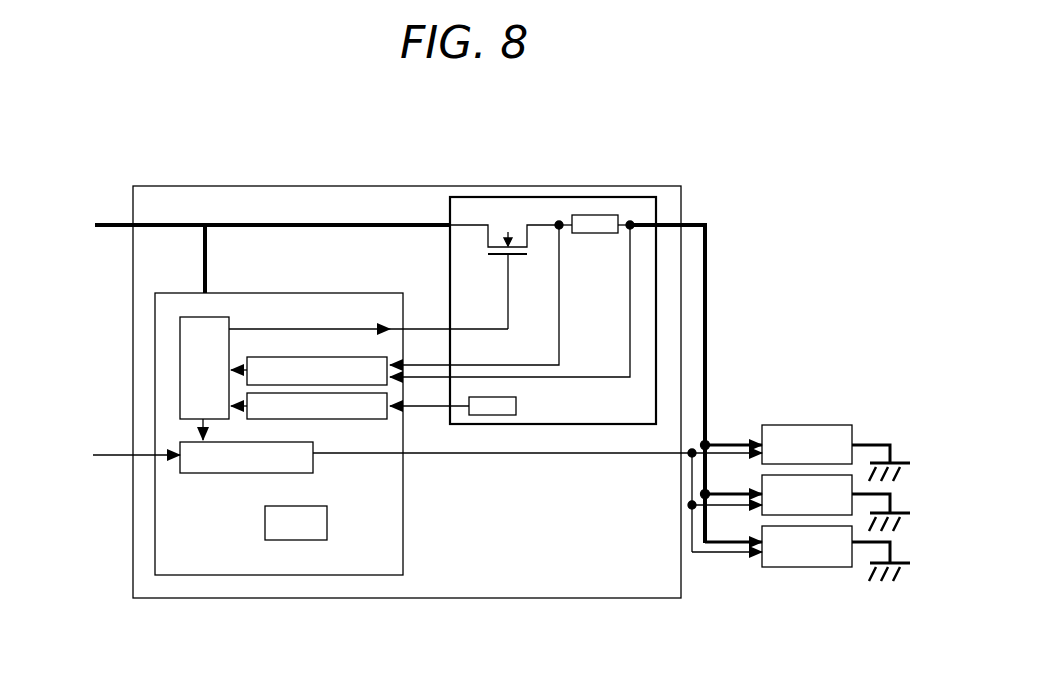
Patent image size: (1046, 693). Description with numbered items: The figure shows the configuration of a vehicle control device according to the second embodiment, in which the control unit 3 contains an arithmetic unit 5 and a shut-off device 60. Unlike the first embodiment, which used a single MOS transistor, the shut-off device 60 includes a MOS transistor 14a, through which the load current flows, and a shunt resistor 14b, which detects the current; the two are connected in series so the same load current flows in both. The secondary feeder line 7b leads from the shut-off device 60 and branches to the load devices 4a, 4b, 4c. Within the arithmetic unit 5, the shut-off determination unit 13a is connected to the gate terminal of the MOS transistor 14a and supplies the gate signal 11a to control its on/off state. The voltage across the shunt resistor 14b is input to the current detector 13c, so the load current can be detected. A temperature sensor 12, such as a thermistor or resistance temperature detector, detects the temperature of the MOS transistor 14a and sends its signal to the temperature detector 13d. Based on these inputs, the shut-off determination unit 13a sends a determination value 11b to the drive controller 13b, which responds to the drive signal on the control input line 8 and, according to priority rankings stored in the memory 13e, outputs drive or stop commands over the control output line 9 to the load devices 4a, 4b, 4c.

The control unit 3 is at (307, 185).
The arithmetic unit 5 is at (148, 310).
The shut-off device 60 is at (553, 196).
The MOS transistor 14a is at (500, 213).
The shunt resistor 14b is at (590, 220).
The secondary feeder line 7b is at (695, 222).
The gate signal 11a is at (435, 327).
The determination value 11b is at (200, 437).
The shut-off determination unit 13a is at (180, 380).
The drive controller 13b is at (220, 475).
The current detector 13c is at (390, 360).
The temperature detector 13d is at (390, 398).
The memory 13e is at (327, 523).
The temperature sensor 12 is at (485, 416).
The control input line 8 is at (117, 458).
The control output line 9 is at (565, 450).
The load device 4a is at (785, 422).
The load device 4b is at (838, 478).
The load device 4c is at (815, 570).